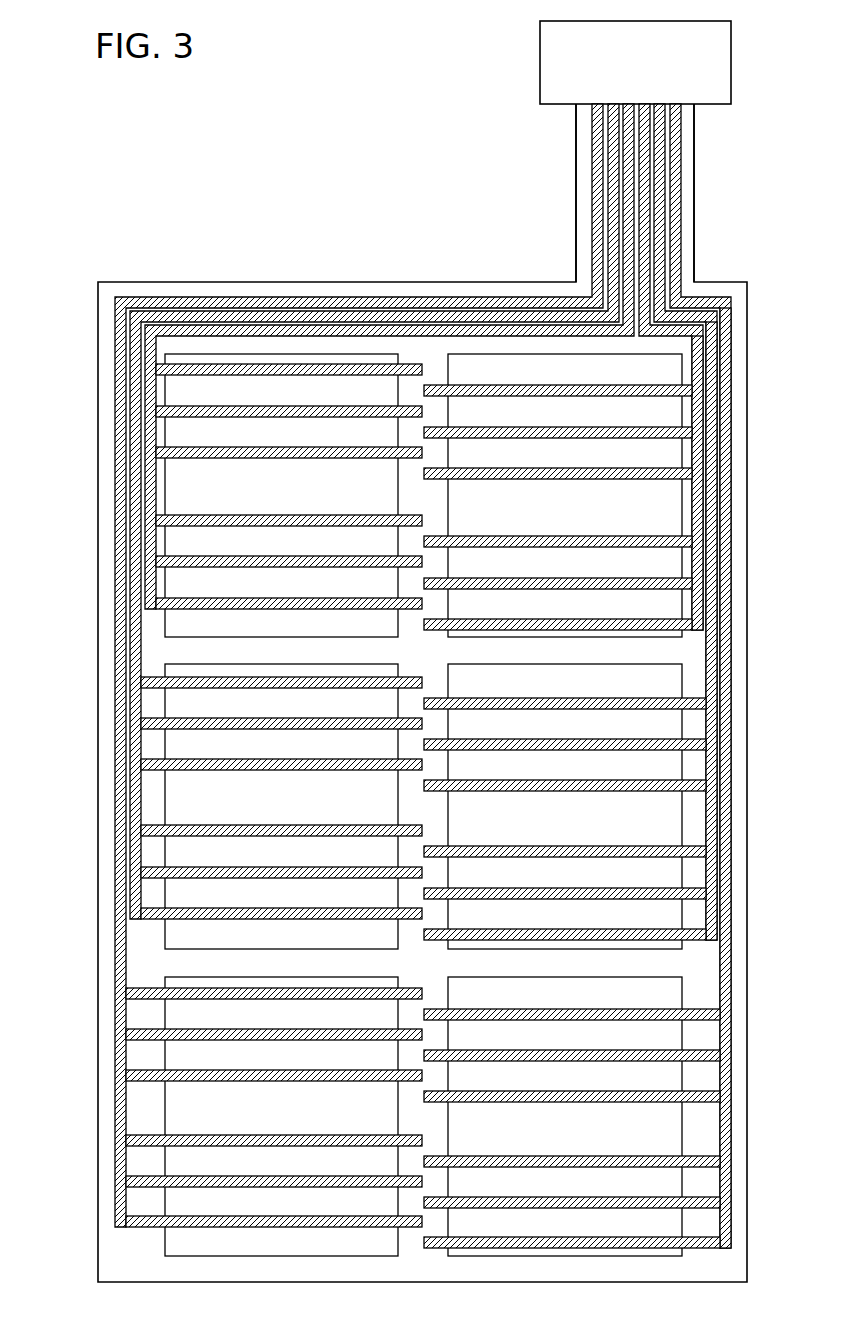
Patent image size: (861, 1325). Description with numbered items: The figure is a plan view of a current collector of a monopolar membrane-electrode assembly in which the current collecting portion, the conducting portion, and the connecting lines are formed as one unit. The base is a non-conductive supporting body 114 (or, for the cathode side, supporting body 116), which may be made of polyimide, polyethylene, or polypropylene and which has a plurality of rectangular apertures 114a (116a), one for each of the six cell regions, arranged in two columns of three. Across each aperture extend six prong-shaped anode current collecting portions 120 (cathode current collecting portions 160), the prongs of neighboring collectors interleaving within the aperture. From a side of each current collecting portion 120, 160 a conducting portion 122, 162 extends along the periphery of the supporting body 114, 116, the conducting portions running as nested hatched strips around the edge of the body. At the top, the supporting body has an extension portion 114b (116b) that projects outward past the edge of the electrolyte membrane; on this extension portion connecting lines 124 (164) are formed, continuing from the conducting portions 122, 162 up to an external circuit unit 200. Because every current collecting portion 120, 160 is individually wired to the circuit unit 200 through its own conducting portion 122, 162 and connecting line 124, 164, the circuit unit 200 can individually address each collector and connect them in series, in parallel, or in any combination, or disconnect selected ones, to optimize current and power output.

The external circuit unit 200 is at (722, 57).
The non-conductive supporting body 114 is at (388, 693).
The non-conductive supporting body 116 is at (192, 653).
The aperture 114a is at (346, 805).
The aperture 116a is at (245, 484).
The extension portion 114b is at (695, 193).
The extension portion 116b is at (698, 213).
The anode current collecting portion 120 is at (477, 806).
The cathode current collecting portion 160 is at (578, 793).
The conducting portion 122 is at (768, 778).
The conducting portion 162 is at (728, 428).
The connecting line 124 is at (423, 676).
The connecting line 164 is at (596, 215).